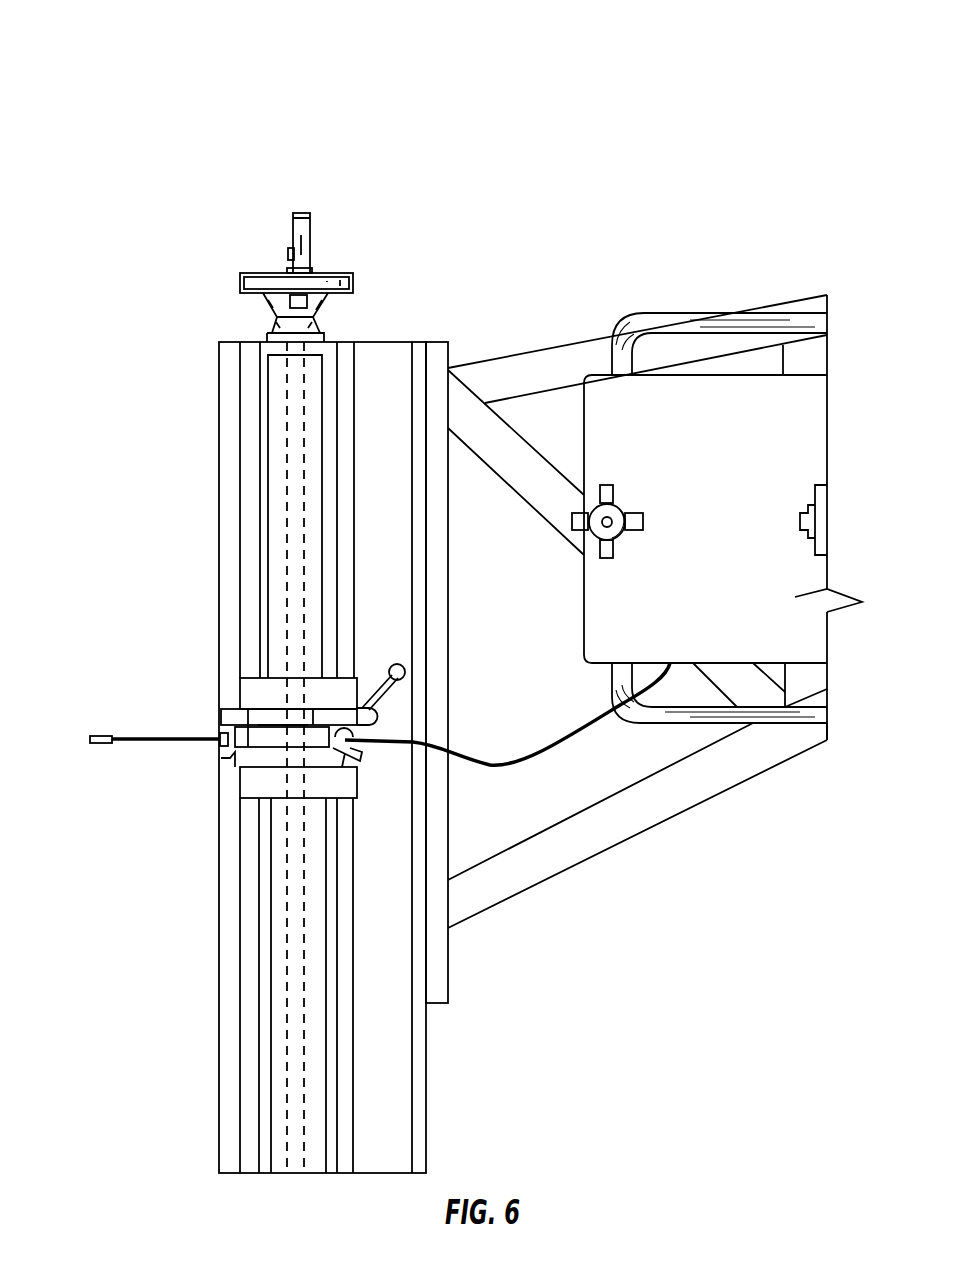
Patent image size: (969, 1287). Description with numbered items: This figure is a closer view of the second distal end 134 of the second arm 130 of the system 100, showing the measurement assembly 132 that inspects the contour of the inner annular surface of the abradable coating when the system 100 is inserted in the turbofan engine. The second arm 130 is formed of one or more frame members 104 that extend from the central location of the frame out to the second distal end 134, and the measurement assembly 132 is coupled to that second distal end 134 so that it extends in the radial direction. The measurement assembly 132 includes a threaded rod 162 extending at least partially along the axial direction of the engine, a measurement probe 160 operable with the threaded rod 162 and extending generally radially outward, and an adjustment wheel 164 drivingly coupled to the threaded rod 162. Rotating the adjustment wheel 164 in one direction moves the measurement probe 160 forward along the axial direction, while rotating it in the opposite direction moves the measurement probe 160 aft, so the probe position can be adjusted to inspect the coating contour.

The system 100 is at (74, 88).
The frame member 104 is at (705, 787).
The second arm 130 is at (793, 222).
The measurement assembly 132 is at (200, 150).
The second distal end 134 is at (450, 652).
The measurement probe 160 is at (140, 742).
The threaded rod 162 is at (287, 1077).
The adjustment wheel 164 is at (254, 272).